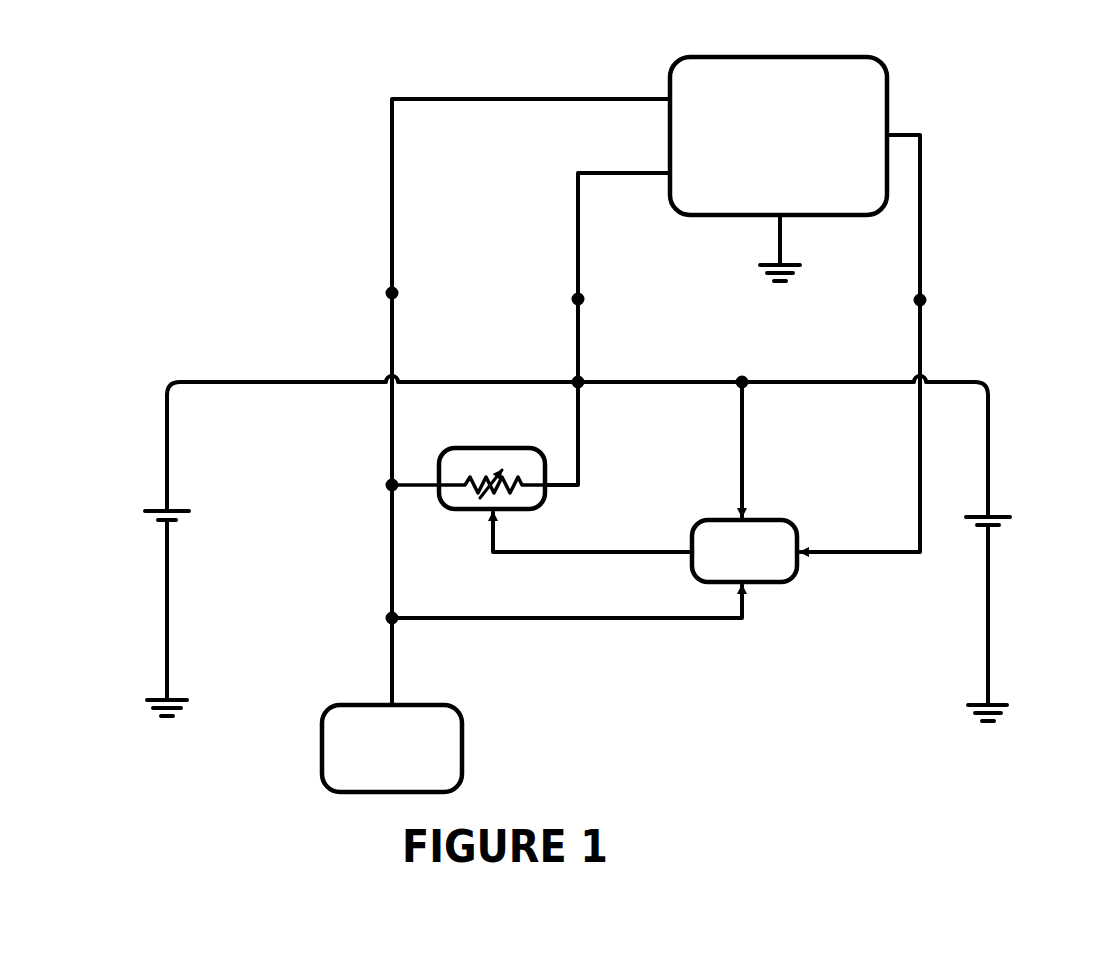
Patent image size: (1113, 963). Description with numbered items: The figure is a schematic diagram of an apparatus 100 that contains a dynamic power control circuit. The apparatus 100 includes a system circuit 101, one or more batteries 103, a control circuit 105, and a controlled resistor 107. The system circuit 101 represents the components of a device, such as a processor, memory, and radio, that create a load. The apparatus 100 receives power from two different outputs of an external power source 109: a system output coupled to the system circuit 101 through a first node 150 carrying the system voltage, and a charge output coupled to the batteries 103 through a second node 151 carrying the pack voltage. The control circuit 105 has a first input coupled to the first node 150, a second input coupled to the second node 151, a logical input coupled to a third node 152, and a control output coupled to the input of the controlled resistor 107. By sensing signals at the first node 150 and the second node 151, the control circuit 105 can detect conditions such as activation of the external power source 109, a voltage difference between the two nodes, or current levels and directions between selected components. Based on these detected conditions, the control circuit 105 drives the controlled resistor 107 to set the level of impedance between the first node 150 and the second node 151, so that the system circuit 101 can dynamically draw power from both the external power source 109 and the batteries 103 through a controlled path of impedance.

The apparatus 100 is at (133, 350).
The system circuit 101 is at (348, 705).
The batteries 103 is at (576, 558).
The control circuit 105 is at (712, 520).
The controlled resistor 107 is at (515, 448).
The external power source 109 is at (670, 72).
The first node 150 is at (392, 293).
The second node 151 is at (578, 299).
The third node 152 is at (920, 300).